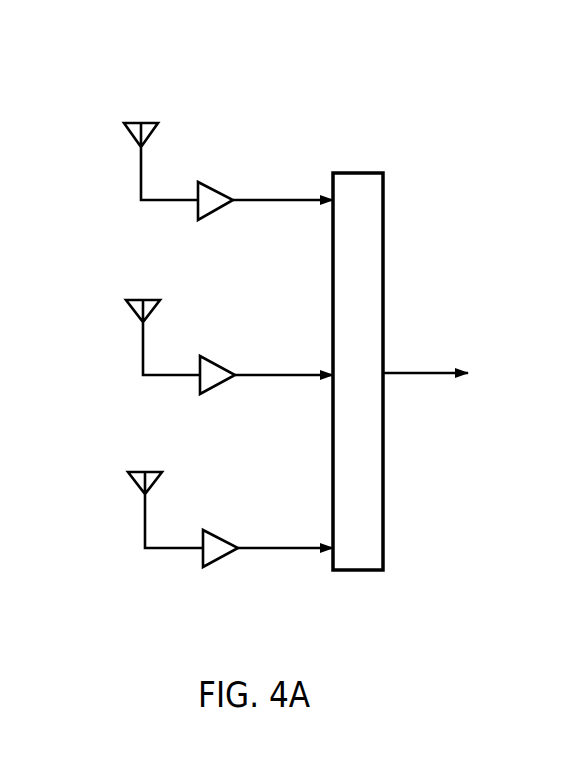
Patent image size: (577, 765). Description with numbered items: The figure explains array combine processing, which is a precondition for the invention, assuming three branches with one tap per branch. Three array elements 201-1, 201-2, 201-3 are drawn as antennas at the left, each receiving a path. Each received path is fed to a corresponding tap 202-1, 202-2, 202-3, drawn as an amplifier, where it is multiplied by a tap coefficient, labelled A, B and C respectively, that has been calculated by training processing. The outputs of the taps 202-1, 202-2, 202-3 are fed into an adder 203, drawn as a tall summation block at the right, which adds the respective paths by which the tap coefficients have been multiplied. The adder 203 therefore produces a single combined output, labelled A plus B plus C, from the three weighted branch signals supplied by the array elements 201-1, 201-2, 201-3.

The array element 201-1 is at (135, 123).
The array element 201-2 is at (137, 300).
The array element 201-3 is at (140, 472).
The tap 202-1 is at (234, 190).
The tap 202-2 is at (236, 366).
The tap 202-3 is at (230, 539).
The adder 203 is at (345, 173).